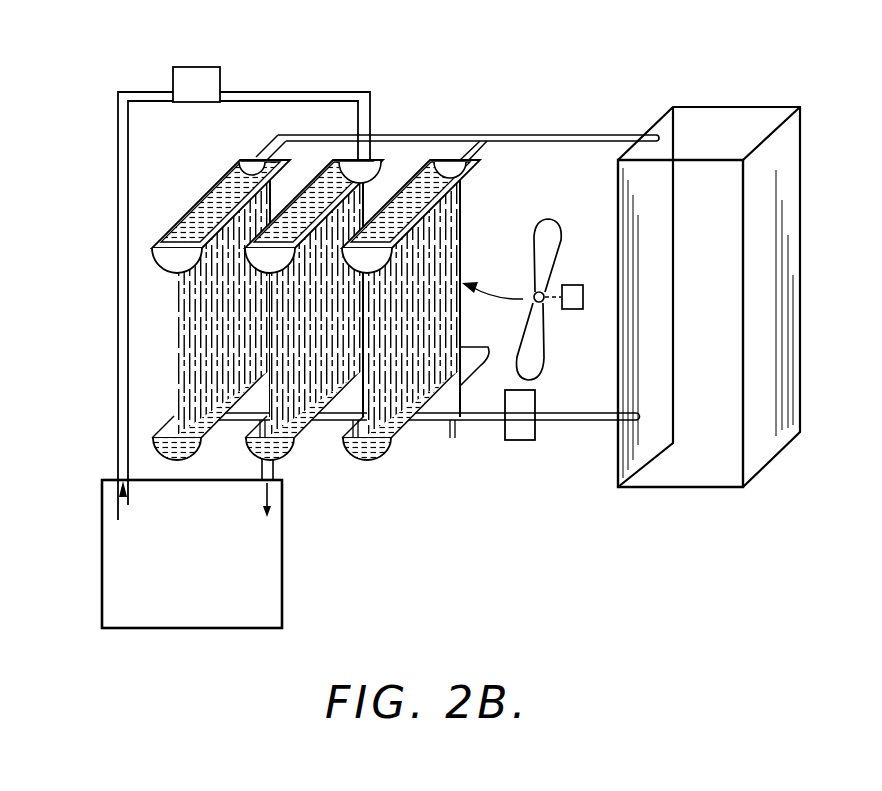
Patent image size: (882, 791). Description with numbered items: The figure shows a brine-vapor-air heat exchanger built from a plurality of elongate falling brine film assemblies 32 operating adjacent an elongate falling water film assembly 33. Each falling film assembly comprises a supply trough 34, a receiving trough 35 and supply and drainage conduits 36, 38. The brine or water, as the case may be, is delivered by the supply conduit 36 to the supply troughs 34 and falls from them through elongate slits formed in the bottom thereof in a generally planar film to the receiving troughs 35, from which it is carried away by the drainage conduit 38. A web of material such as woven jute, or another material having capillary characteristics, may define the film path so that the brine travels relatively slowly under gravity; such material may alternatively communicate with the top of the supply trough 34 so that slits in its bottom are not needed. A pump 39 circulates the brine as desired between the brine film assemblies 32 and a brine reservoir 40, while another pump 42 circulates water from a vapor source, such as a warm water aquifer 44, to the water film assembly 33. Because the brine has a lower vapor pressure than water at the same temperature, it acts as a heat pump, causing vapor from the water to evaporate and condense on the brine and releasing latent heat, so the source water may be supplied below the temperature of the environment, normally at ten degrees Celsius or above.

The falling brine film assembly 32 is at (190, 203).
The falling water film assembly 33 is at (362, 205).
The supply trough 34 is at (252, 156).
The receiving trough 35 is at (180, 460).
The supply conduit 36 is at (333, 96).
The drainage conduit 38 is at (273, 474).
The pump 39 is at (537, 398).
The brine reservoir 40 is at (786, 282).
The pump 42 is at (218, 84).
The warm water aquifer 44 is at (272, 588).